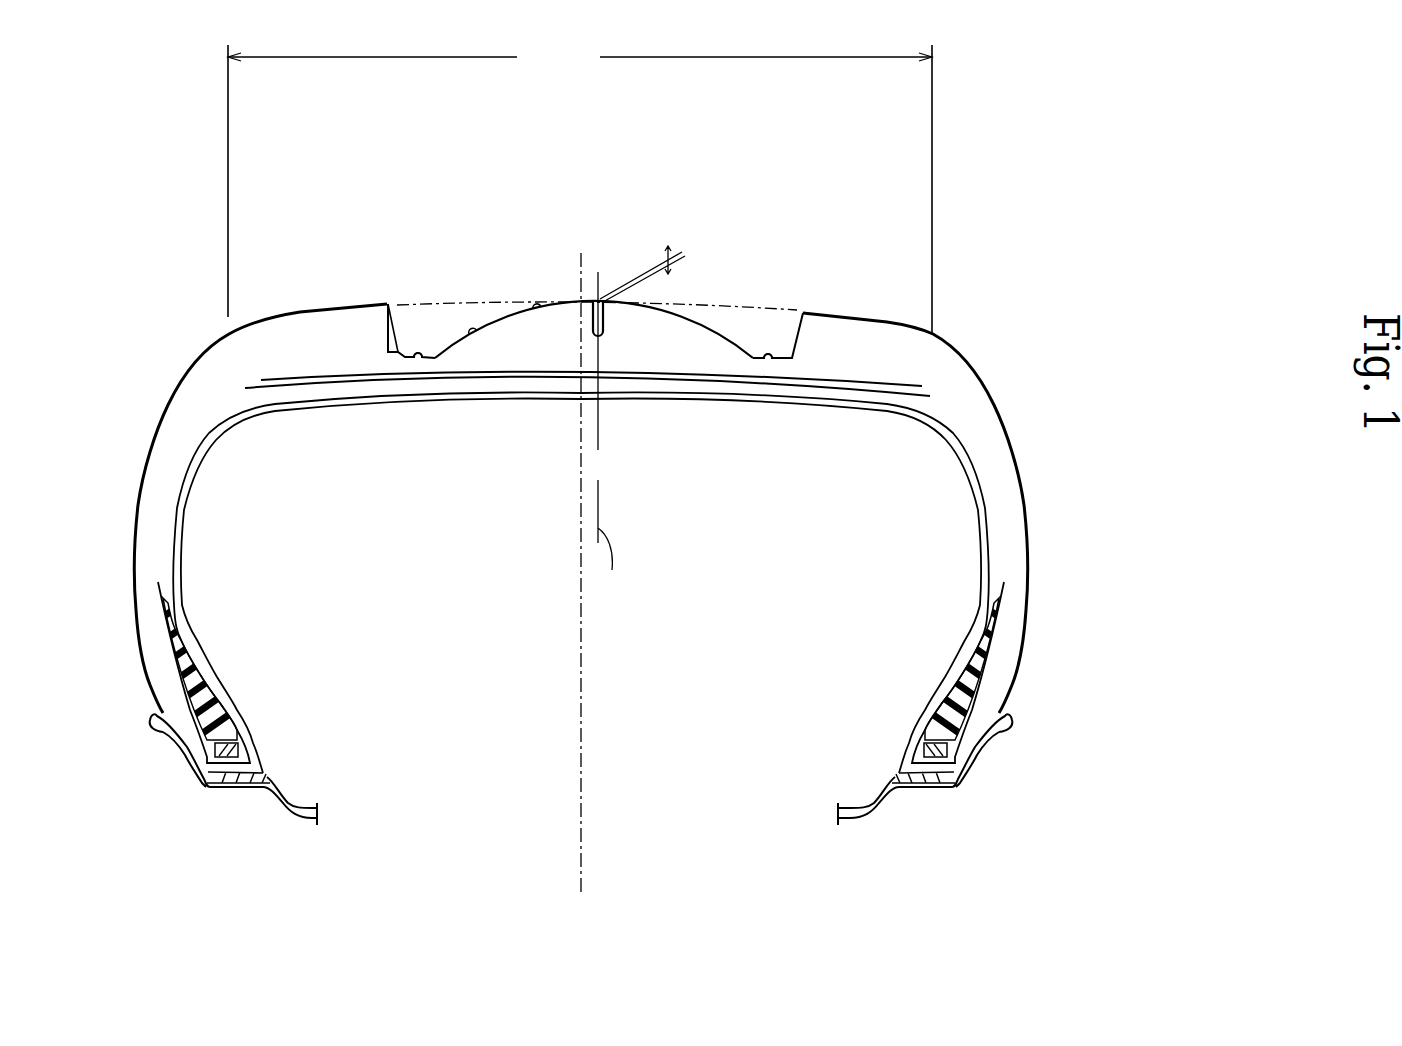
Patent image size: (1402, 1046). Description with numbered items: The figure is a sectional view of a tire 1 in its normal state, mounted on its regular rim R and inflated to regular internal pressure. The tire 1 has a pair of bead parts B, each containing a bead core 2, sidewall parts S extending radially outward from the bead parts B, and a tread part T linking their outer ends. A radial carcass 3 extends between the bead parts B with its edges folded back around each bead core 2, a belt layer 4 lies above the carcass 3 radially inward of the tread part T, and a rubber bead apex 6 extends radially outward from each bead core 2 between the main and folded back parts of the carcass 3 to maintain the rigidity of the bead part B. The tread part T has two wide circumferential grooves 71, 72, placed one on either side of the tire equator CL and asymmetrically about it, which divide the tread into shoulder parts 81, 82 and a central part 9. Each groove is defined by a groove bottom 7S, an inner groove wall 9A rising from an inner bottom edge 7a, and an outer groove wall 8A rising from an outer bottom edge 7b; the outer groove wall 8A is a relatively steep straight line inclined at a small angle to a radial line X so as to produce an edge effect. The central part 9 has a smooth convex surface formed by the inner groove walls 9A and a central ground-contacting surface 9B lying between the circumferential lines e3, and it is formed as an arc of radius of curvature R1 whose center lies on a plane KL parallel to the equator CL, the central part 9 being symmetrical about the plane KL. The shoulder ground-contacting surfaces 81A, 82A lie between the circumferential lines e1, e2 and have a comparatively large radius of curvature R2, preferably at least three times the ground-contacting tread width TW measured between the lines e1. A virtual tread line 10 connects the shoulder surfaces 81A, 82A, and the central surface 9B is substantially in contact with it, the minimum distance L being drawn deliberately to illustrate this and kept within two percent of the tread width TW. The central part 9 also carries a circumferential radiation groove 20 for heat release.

The tire 1 is at (957, 260).
The tread part T is at (955, 190).
The sidewall parts S is at (1035, 468).
The bead parts B is at (999, 693).
The bead core 2 is at (948, 757).
The radial carcass 3 is at (988, 520).
The belt layer 4 is at (928, 398).
The rubber bead apex 6 is at (990, 643).
The regular rim R is at (873, 797).
The central part 9 is at (552, 310).
The inner groove walls 9A is at (473, 335).
The central ground-contacting surface 9B is at (536, 310).
The inner bottom edges 7a is at (424, 358).
The outer bottom edge 7b is at (397, 352).
The groove bottom 7S is at (418, 358).
The outer groove wall 8A is at (403, 320).
The virtual tread line 10 is at (470, 300).
The circumferential radiation groove 20 is at (605, 283).
The circumferential groove 71 is at (443, 312).
The circumferential groove 72 is at (760, 318).
The shoulder part 81 is at (315, 312).
The shoulder part 82 is at (845, 318).
The shoulder ground-contacting surface 81A is at (347, 312).
The shoulder ground-contacting surface 82A is at (888, 318).
The circumferential line e1 is at (223, 313).
The circumferential line e2 is at (387, 300).
The circumferential line e3 is at (512, 312).
The radial line X is at (387, 333).
The minimum distance L is at (682, 253).
The ground-contacting tread width TW is at (580, 187).
The tire equator CL is at (582, 878).
The plane KL is at (610, 438).
The radius of curvature R1 is at (637, 307).
The radius of curvature R2 is at (580, 862).